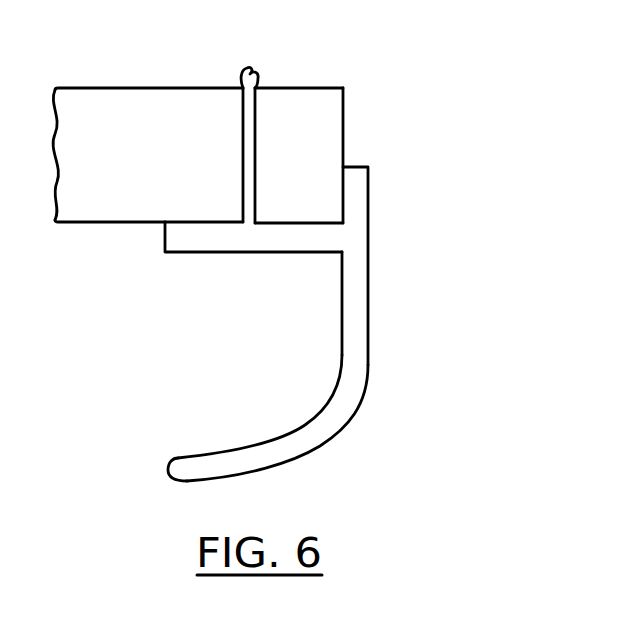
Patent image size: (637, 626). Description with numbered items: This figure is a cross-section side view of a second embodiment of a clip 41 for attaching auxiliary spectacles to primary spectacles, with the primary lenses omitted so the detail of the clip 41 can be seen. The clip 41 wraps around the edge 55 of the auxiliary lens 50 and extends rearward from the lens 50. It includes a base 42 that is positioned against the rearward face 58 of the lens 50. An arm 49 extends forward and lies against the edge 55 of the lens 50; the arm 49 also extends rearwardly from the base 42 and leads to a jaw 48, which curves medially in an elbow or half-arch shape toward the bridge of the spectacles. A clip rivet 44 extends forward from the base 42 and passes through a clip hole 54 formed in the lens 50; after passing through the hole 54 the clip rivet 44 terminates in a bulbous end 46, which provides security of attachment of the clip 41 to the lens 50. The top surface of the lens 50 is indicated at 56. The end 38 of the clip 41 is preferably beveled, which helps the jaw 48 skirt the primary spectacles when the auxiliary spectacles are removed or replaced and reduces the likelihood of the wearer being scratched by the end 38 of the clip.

The end 38 is at (158, 471).
The clip 41 is at (434, 185).
The base 42 is at (217, 240).
The clip rivet 44 is at (248, 175).
The bulbous end 46 is at (250, 72).
The jaw 48 is at (324, 416).
The arm 49 is at (368, 345).
The lens 50 is at (88, 164).
The clip hole 54 is at (238, 141).
The edge 55 is at (350, 125).
The top surface of body 56 is at (82, 84).
The rearward face 58 is at (85, 228).